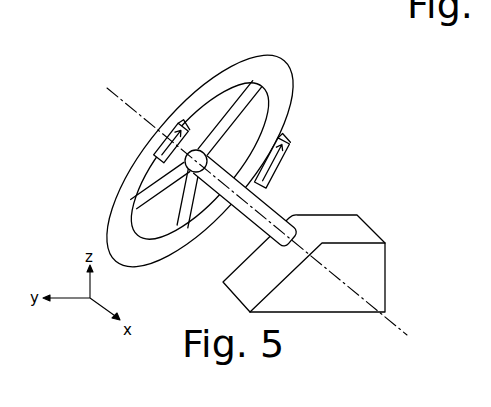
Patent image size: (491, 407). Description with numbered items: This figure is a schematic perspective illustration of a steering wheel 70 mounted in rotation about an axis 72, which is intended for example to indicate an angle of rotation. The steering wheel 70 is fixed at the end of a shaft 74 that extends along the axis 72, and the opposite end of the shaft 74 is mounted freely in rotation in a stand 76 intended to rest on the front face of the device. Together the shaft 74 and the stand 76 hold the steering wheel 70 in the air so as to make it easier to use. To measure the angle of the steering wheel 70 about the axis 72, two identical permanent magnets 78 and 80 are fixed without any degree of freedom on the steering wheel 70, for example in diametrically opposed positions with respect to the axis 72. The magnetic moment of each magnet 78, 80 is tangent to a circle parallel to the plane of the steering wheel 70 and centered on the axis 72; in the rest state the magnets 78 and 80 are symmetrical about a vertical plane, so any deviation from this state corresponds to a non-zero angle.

The steering wheel 70 is at (290, 57).
The axis 72 is at (113, 91).
The shaft 74 is at (274, 204).
The stand 76 is at (366, 268).
The permanent magnet 78 is at (281, 138).
The permanent magnet 80 is at (178, 126).